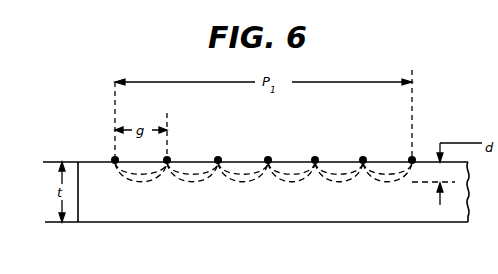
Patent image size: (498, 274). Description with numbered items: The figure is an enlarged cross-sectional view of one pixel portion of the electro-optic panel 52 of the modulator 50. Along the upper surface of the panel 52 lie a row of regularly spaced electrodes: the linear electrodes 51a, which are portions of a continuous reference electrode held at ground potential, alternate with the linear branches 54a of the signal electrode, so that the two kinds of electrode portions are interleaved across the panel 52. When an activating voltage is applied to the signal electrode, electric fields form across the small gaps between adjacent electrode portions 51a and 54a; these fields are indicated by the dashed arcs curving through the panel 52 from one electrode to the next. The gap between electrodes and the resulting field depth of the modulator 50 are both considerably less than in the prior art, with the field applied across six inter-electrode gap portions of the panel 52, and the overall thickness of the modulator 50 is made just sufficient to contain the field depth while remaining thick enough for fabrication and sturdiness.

The modulator 50 is at (84, 128).
The linear electrodes 51a is at (115, 164).
The electro-optic panel 52 is at (445, 215).
The linear branches of the signal electrode 54a is at (167, 167).